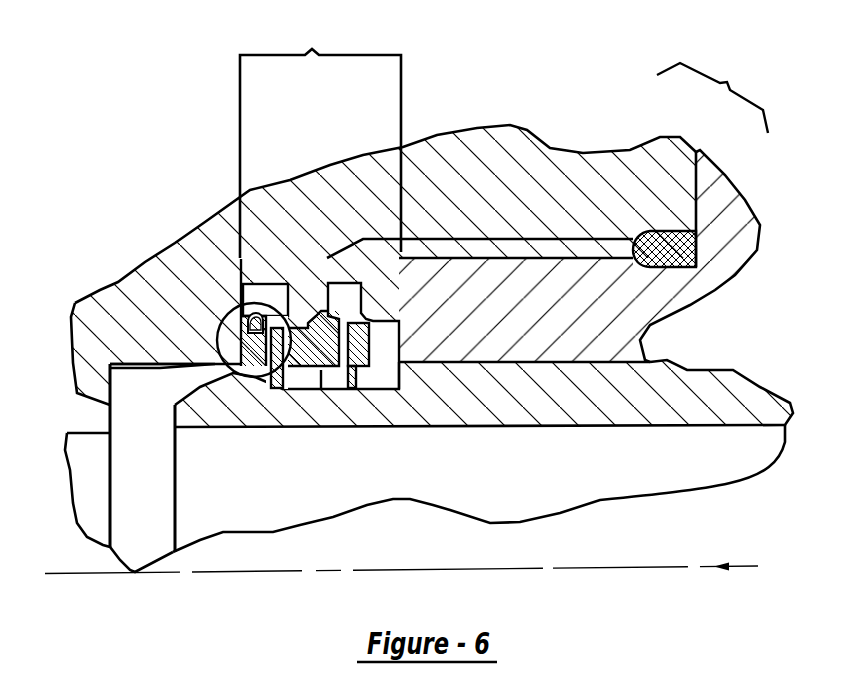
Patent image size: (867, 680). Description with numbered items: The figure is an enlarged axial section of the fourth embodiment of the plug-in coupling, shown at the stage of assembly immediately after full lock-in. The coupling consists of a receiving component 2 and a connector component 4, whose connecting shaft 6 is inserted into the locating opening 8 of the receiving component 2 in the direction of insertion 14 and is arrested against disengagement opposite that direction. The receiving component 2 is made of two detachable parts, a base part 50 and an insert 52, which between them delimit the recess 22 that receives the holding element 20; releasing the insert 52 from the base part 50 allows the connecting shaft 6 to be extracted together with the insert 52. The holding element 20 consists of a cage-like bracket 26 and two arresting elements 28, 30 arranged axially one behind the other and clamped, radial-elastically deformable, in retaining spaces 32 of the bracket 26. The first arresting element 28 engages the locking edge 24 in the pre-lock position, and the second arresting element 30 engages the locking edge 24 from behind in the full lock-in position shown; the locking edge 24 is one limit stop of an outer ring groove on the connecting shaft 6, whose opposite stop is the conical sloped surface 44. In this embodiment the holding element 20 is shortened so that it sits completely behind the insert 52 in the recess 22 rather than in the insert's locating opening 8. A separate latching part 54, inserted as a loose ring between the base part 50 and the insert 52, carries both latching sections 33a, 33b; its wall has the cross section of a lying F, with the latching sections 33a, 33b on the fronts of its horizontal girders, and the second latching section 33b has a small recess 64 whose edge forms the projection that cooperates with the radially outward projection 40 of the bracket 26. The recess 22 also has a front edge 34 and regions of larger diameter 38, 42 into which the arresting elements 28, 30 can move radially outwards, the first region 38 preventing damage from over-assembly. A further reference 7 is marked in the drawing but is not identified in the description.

The receiving component 2 is at (712, 96).
The connector component 4 is at (773, 383).
The connecting shaft 6 is at (708, 383).
The gap 7 is at (110, 363).
The locating opening 8 is at (349, 316).
The direction of insertion 14 is at (742, 567).
The holding element 20 is at (236, 326).
The recess 22 is at (320, 138).
The locking edge 24 is at (270, 389).
The bracket 26 is at (387, 370).
The first arresting element 28 is at (348, 373).
The second arresting element 30 is at (321, 370).
The retaining space 32 is at (236, 265).
The first latching section 33a is at (375, 318).
The second latching section 33b is at (291, 300).
The front edge 34 is at (203, 417).
The first region of larger diameter 38 is at (403, 375).
The projection 40 is at (329, 313).
The second region of larger diameter 42 is at (262, 292).
The conical sloped surface 44 is at (403, 375).
The base part 50 is at (658, 163).
The insert 52 is at (717, 185).
The latching part 54 is at (235, 262).
The small recess 64 is at (316, 300).